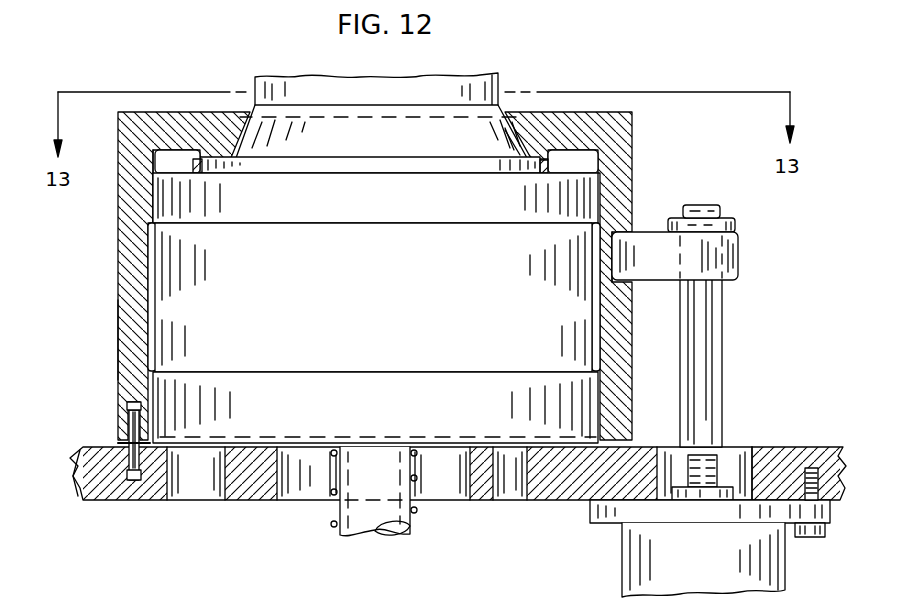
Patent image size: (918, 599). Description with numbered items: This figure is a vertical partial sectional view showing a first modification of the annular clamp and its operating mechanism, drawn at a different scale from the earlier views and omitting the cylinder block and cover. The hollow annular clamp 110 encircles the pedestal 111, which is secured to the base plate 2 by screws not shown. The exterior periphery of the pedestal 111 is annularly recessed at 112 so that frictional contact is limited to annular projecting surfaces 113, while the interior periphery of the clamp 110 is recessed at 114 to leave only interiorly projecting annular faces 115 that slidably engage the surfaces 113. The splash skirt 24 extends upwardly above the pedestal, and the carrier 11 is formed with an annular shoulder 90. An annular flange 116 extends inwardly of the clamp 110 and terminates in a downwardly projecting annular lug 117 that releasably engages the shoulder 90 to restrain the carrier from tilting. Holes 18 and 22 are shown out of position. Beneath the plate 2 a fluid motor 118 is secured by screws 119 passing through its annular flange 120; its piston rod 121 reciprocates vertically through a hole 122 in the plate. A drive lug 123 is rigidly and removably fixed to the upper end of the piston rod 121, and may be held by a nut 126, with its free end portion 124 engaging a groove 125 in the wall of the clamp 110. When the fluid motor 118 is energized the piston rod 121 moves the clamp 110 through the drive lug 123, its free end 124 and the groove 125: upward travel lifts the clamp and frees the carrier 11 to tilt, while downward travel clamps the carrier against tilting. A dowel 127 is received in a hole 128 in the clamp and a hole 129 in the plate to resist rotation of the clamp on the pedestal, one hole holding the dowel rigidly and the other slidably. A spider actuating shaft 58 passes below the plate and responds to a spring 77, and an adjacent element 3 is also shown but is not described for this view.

The base plate 2 is at (118, 500).
The sleeve 3 is at (440, 500).
The carrier 11 is at (368, 134).
The hole 18 is at (503, 497).
The hole 22 is at (190, 500).
The splash skirt 24 is at (376, 161).
The spider actuating shaft 58 is at (338, 516).
The spring 77 is at (336, 527).
The annular shoulder 90 is at (467, 157).
The annular clamp 110 is at (632, 127).
The pedestal 111 is at (393, 315).
The annular recess 112 is at (158, 300).
The annular projecting surfaces 113 is at (155, 212).
The interior recess 114 is at (140, 330).
The interiorly projecting annular faces 115 is at (150, 203).
The annular flange 116 is at (602, 110).
The annular lug 117 is at (530, 173).
The fluid motor 118 is at (690, 577).
The screws 119 is at (810, 537).
The annular flange 120 is at (592, 518).
The piston rod 121 is at (722, 382).
The hole 122 is at (752, 456).
The drive lug 123 is at (740, 266).
The free end portion 124 is at (632, 228).
The groove 125 is at (596, 234).
The nut 126 is at (740, 228).
The dowel 127 is at (126, 444).
The hole 128 is at (127, 406).
The hole 129 is at (96, 470).